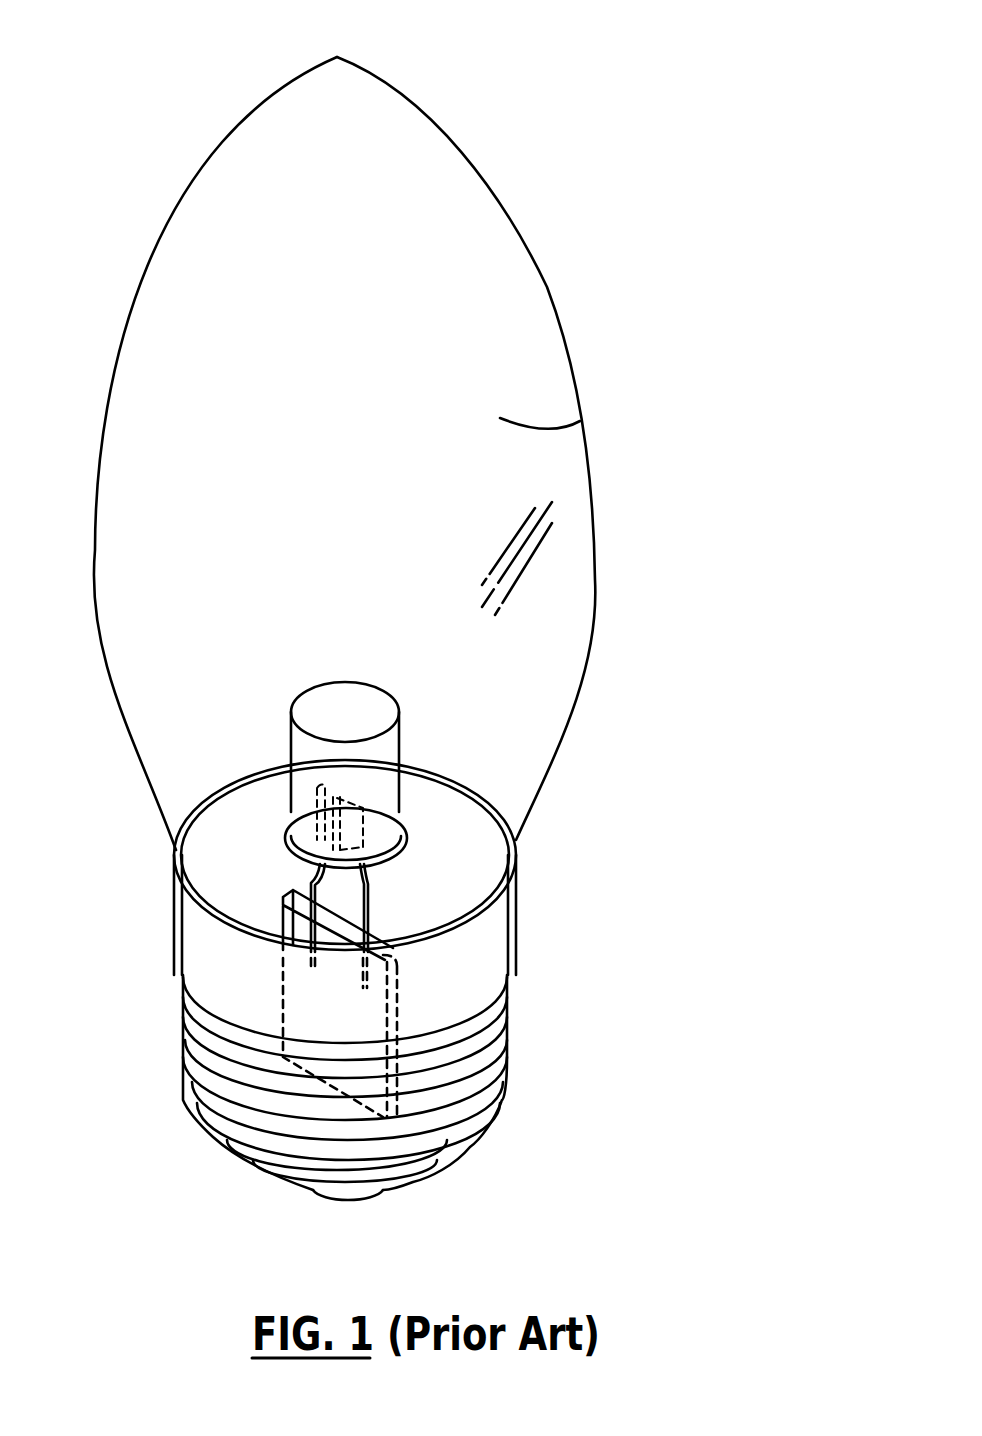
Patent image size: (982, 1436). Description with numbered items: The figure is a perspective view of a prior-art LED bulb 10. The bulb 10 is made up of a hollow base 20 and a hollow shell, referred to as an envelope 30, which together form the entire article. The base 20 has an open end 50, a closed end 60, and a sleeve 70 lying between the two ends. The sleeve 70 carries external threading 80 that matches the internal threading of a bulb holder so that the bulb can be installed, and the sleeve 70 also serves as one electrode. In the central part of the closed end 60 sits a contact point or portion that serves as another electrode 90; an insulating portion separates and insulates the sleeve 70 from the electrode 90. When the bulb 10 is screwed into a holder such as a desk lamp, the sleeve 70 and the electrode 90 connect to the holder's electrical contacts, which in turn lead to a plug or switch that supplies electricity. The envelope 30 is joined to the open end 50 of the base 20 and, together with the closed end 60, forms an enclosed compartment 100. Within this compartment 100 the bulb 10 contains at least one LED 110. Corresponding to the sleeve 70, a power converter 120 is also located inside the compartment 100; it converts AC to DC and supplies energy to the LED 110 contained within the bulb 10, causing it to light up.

The LED bulb 10 is at (542, 148).
The base 20 is at (508, 990).
The envelope 30 is at (567, 345).
The open end 50 is at (516, 873).
The closed end 60 is at (447, 1160).
The sleeve 70 is at (165, 845).
The external threading 80 is at (506, 1045).
The electrode 90 is at (350, 1205).
The enclosed compartment 100 is at (580, 421).
The LED 110 is at (398, 740).
The power converter 120 is at (397, 993).